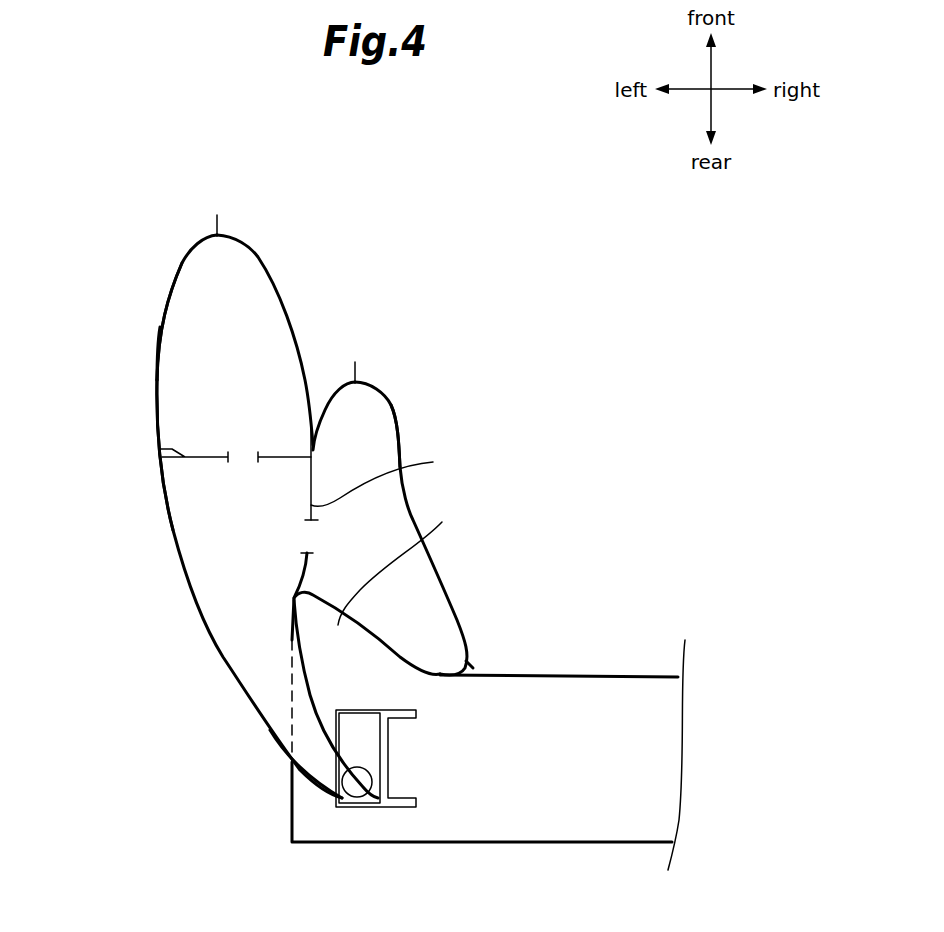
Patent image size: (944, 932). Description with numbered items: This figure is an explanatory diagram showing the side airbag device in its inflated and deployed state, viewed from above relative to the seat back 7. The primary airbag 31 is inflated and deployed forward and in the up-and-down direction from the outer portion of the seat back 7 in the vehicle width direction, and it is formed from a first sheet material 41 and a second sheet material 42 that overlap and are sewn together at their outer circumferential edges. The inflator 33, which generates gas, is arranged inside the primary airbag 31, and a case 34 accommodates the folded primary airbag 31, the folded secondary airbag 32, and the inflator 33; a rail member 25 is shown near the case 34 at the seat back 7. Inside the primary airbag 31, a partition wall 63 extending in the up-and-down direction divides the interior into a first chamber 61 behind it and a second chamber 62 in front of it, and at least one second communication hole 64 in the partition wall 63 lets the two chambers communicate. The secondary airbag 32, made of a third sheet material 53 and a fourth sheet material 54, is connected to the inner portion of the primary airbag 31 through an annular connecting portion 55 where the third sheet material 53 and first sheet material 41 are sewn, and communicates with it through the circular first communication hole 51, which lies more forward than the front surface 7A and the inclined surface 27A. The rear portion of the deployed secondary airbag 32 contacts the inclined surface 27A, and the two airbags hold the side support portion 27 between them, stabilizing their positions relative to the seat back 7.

The seat back 7 is at (633, 827).
The front surface of the seat back 7A is at (630, 677).
The rail member 25 is at (403, 805).
The side support portion 27 is at (407, 559).
The inclined surface 27A is at (387, 638).
The primary airbag 31 is at (183, 266).
The secondary airbag 32 is at (382, 393).
The inflator 33 is at (358, 800).
The case 34 is at (332, 800).
The first sheet material 41 is at (258, 257).
The second sheet material 42 is at (160, 327).
The first communication hole 51 is at (303, 553).
The third sheet material 53 is at (347, 393).
The fourth sheet material 54 is at (397, 430).
The connecting portion 55 is at (390, 477).
The first chamber 61 is at (234, 517).
The second chamber 62 is at (249, 364).
The partition wall 63 is at (160, 449).
The second communication hole 64 is at (228, 457).